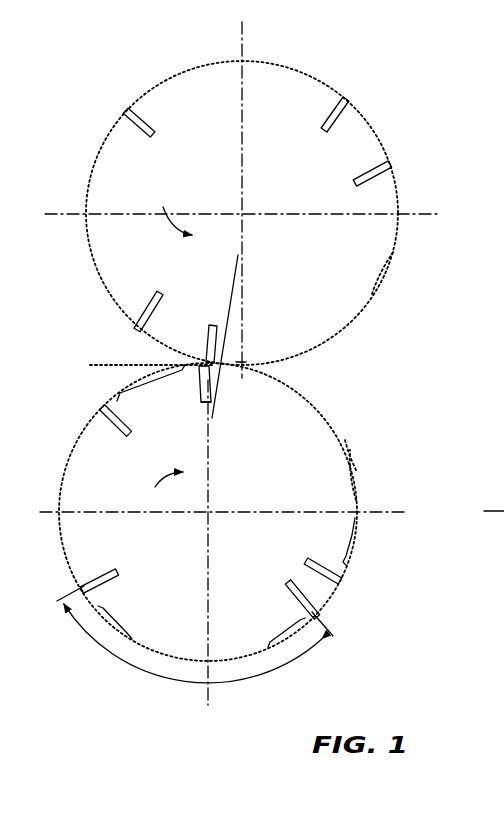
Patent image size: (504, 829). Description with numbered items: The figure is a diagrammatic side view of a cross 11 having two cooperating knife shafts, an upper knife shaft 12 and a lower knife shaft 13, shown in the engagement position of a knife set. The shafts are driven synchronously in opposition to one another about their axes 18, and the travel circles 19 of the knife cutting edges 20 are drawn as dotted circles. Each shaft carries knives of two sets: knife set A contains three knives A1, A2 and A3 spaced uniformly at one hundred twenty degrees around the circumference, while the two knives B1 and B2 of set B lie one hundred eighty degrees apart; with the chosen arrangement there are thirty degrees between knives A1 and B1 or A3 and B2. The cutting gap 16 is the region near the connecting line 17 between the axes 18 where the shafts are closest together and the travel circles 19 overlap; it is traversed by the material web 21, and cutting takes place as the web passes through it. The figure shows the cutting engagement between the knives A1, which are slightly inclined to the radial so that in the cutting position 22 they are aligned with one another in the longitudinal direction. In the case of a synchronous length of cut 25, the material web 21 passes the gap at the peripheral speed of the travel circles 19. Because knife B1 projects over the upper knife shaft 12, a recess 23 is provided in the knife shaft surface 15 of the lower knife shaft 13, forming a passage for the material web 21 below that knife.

The cross 11 is at (395, 90).
The upper knife shaft 12 is at (385, 248).
The lower knife shaft 13 is at (330, 441).
The knife shaft surface 15 is at (357, 470).
The cutting gap 16 is at (240, 362).
The connecting line 17 is at (238, 260).
The axes 18 is at (241, 219).
The travel circles 19 is at (376, 296).
The knife cutting edge 20 is at (339, 585).
The material web 21 is at (400, 367).
The cutting position 22 is at (220, 376).
The recess 23 is at (120, 386).
The synchronous length of cut 25 is at (195, 640).
The knife A1 is at (212, 324).
The knife A2 is at (153, 134).
The knife A3 is at (355, 183).
The knife B1 is at (166, 282).
The knife B2 is at (324, 130).